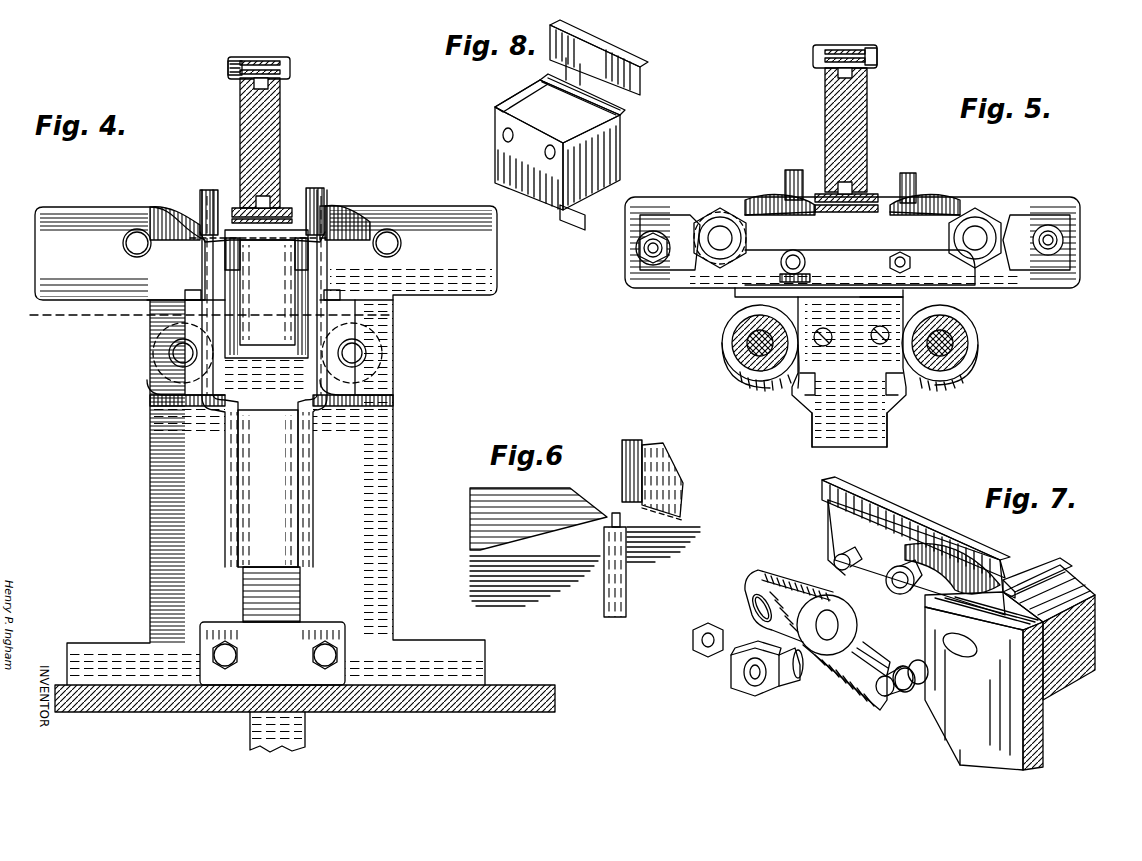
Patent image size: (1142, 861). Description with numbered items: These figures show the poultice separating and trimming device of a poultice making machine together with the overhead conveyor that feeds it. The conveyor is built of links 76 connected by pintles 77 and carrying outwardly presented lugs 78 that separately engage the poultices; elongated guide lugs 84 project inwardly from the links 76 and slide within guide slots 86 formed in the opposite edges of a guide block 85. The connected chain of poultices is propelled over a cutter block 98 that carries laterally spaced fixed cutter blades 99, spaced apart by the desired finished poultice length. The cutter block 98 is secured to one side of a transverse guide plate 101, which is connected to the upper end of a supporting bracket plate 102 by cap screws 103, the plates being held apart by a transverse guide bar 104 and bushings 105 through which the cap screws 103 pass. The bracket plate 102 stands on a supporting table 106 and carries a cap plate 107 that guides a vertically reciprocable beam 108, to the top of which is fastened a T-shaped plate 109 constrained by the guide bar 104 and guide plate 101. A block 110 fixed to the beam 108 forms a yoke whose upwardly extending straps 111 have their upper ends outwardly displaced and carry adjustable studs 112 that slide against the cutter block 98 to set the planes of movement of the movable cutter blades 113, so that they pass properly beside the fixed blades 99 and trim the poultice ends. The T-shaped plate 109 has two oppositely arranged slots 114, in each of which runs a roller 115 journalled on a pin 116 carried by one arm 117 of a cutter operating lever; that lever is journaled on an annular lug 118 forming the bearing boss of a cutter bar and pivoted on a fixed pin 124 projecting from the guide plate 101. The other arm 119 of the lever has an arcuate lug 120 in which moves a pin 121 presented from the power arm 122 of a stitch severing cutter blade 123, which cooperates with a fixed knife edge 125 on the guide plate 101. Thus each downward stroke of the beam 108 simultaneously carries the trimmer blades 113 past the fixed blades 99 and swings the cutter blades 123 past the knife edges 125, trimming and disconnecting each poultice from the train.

In FIG. 4, the links 76 is at (280, 63).
In FIG. 5, the links 76 is at (813, 57).
In FIG. 4, the pintles 77 is at (228, 66).
In FIG. 5, the pintles 77 is at (870, 48).
In FIG. 4, the outwardly presented lugs 78 is at (252, 57).
In FIG. 5, the outwardly presented lugs 78 is at (845, 45).
In FIG. 5, the guide lugs 84 is at (868, 72).
In FIG. 4, the guide block 85 is at (280, 134).
In FIG. 5, the guide block 85 is at (867, 112).
In FIG. 4, the guide slots 86 is at (268, 86).
In FIG. 5, the guide slots 86 is at (842, 76).
In FIG. 4, the cutter block 98 is at (300, 285).
In FIG. 8, the cutter block 98 is at (557, 145).
In FIG. 7, the cutter block 98 is at (1056, 619).
In FIG. 4, the fixed cutter blades 99 is at (295, 258).
In FIG. 8, the fixed cutter blades 99 is at (525, 84).
In FIG. 6, the fixed cutter blades 99 is at (611, 572).
In FIG. 7, the fixed cutter blades 99 is at (1045, 565).
In FIG. 4, the transverse guide plate 101 is at (393, 295).
In FIG. 5, the transverse guide plate 101 is at (1030, 282).
In FIG. 6, the transverse guide plate 101 is at (600, 578).
In FIG. 7, the transverse guide plate 101 is at (1043, 712).
In FIG. 4, the supporting bracket plate 102 is at (147, 505).
In FIG. 5, the supporting bracket plate 102 is at (849, 372).
In FIG. 4, the cap screws 103 is at (175, 358).
In FIG. 5, the cap screws 103 is at (735, 350).
In FIG. 4, the transverse guide bar 104 is at (170, 400).
In FIG. 5, the transverse guide bar 104 is at (775, 385).
In FIG. 4, the bushings 105 is at (153, 353).
In FIG. 5, the bushings 105 is at (930, 200).
In FIG. 4, the supporting table 106 is at (445, 712).
In FIG. 4, the cap plate 107 is at (237, 670).
In FIG. 4, the reciprocable beam 108 is at (305, 740).
In FIG. 5, the T-shaped plate 109 is at (860, 264).
In FIG. 7, the T-shaped plate 109 is at (1005, 738).
In FIG. 4, the block 110 is at (258, 575).
In FIG. 4, the straps 111 is at (225, 540).
In FIG. 8, the straps 111 is at (572, 222).
In FIG. 4, the adjustable studs 112 is at (186, 294).
In FIG. 4, the cutter blades 113 is at (210, 190).
In FIG. 8, the cutter blades 113 is at (640, 75).
In FIG. 5, the cutter blades 113 is at (795, 190).
In FIG. 6, the cutter blades 113 is at (630, 440).
In FIG. 5, the slots 114 is at (835, 266).
In FIG. 7, the slots 114 is at (962, 655).
In FIG. 5, the roller 115 is at (738, 296).
In FIG. 7, the roller 115 is at (910, 690).
In FIG. 7, the pin 116 is at (883, 697).
In FIG. 7, the lever arm 117 is at (850, 683).
In FIG. 7, the annular lug 118 is at (930, 545).
In FIG. 5, the lever arm 119 is at (672, 270).
In FIG. 7, the lever arm 119 is at (778, 578).
In FIG. 5, the arcuate lug 120 is at (650, 232).
In FIG. 7, the arcuate lug 120 is at (748, 598).
In FIG. 5, the pin 121 is at (640, 255).
In FIG. 7, the pin 121 is at (838, 554).
In FIG. 7, the power arm 122 is at (890, 525).
In FIG. 4, the stitch severing cutter blade 123 is at (185, 212).
In FIG. 5, the stitch severing cutter blade 123 is at (755, 200).
In FIG. 6, the stitch severing cutter blade 123 is at (665, 477).
In FIG. 7, the stitch severing cutter blade 123 is at (975, 560).
In FIG. 4, the fixed pin 124 is at (137, 235).
In FIG. 5, the fixed pin 124 is at (720, 232).
In FIG. 7, the fixed pin 124 is at (905, 592).
In FIG. 4, the knife edges 125 is at (205, 240).
In FIG. 5, the knife edges 125 is at (782, 215).
In FIG. 6, the knife edges 125 is at (664, 540).
In FIG. 7, the knife edges 125 is at (985, 605).